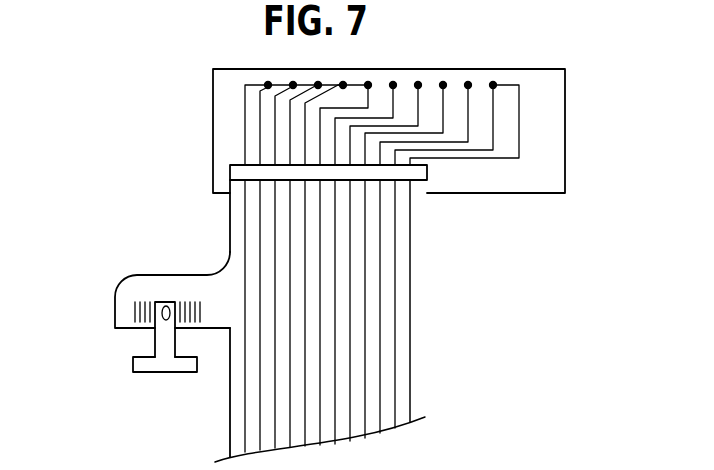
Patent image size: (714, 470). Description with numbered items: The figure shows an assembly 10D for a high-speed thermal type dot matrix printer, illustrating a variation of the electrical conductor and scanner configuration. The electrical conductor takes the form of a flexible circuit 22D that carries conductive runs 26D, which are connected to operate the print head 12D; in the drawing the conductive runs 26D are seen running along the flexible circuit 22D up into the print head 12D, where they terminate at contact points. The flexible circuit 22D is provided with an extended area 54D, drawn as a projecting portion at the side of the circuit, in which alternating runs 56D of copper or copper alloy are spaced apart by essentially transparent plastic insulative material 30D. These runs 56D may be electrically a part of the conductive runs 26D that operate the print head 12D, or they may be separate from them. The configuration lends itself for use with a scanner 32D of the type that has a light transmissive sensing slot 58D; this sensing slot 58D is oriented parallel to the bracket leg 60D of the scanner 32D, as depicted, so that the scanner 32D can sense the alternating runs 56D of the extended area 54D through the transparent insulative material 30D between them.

The assembly 10D is at (452, 58).
The print head 12D is at (555, 93).
The flexible circuit 22D is at (412, 230).
The conductive runs 26D is at (395, 312).
The transparent plastic insulative material 30D is at (372, 425).
The scanner 32D is at (167, 362).
The extended area 54D is at (116, 291).
The runs 56D is at (190, 307).
The light transmissive sensing slot 58D is at (160, 290).
The bracket leg 60D is at (168, 340).